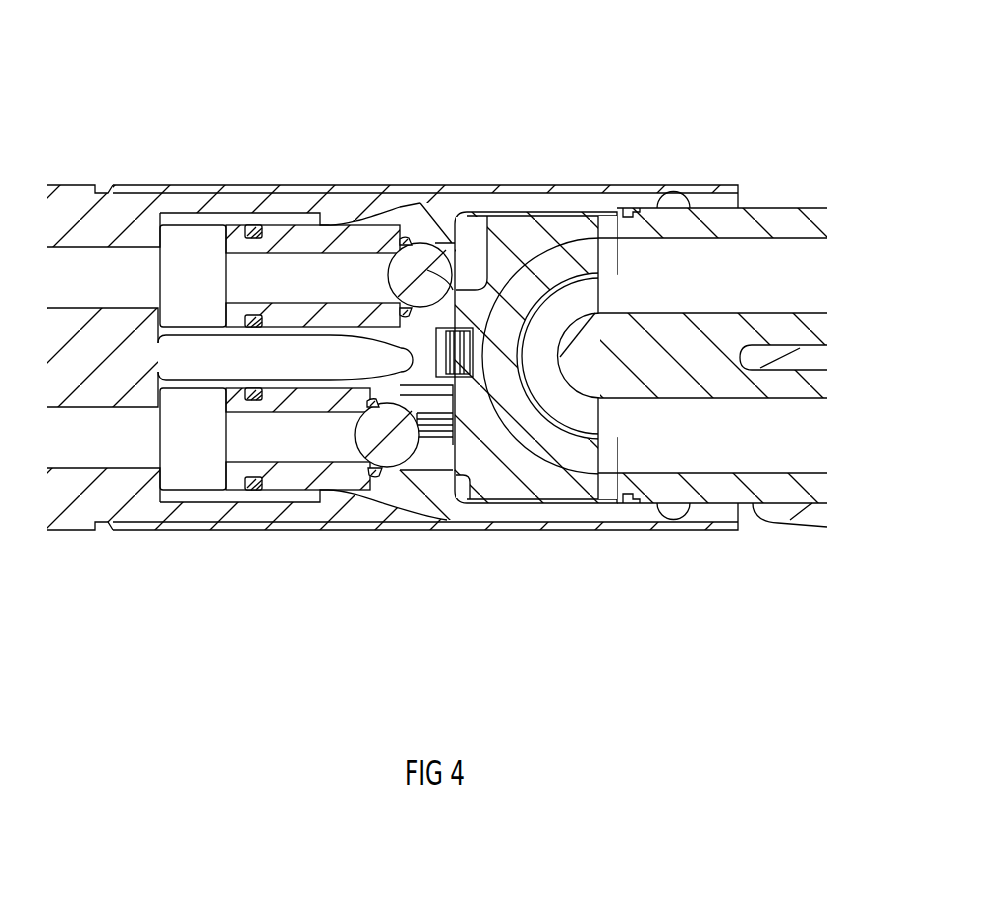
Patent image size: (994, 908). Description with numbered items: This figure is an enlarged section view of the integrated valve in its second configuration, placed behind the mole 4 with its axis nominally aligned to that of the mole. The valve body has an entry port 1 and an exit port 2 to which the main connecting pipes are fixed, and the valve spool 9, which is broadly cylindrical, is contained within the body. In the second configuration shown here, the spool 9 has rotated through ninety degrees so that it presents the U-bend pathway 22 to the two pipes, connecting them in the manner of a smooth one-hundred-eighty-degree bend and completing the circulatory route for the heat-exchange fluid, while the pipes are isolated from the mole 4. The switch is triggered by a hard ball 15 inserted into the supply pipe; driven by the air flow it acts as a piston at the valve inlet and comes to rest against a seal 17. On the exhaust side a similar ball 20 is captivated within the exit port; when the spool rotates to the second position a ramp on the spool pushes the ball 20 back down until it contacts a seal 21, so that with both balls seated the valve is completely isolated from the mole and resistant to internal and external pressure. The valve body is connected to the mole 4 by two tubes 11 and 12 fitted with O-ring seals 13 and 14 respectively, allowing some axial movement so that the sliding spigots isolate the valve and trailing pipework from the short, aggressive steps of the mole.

The entry port 1 is at (720, 265).
The exit port 2 is at (707, 435).
The mole 4 is at (58, 177).
The valve spool 9 is at (542, 222).
The tube 11 is at (342, 213).
The tube 12 is at (308, 472).
The O-ring seal 13 is at (250, 225).
The O-ring seal 14 is at (252, 488).
The ball 15 is at (482, 280).
The seal 17 is at (407, 240).
The ball 20 is at (397, 452).
The seal 21 is at (380, 472).
The U-bend pathway 22 is at (543, 432).